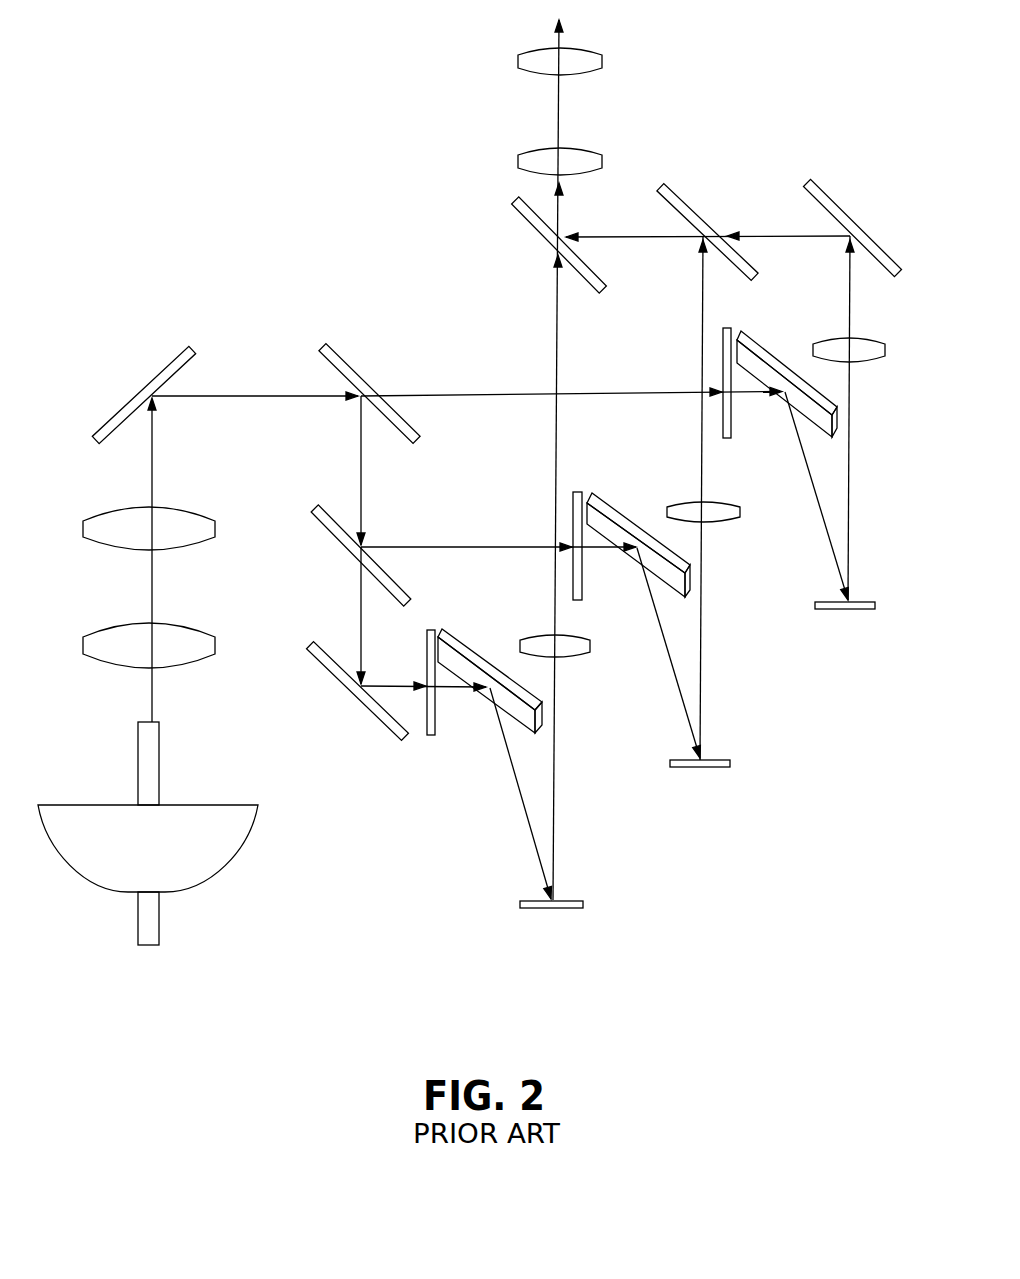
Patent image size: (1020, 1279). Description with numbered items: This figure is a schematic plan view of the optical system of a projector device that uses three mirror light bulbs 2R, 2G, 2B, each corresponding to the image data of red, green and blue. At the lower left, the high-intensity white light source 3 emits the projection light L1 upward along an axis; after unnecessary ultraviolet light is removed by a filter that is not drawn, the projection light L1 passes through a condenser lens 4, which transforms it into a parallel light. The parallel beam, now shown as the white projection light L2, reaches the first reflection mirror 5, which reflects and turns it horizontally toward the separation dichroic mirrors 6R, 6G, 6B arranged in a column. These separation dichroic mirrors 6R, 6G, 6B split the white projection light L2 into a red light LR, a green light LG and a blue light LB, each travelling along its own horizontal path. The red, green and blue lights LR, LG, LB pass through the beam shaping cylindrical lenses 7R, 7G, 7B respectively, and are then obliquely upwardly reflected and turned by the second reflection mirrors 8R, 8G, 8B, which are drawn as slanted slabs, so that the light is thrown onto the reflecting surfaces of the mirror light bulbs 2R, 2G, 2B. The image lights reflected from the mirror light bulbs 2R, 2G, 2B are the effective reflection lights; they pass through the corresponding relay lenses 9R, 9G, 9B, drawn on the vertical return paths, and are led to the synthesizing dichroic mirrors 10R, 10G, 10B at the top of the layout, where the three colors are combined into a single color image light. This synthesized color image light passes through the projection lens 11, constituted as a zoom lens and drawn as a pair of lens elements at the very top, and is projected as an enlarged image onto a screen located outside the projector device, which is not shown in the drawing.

The mirror light bulb 2R is at (828, 612).
The mirror light bulb 2G is at (720, 770).
The mirror light bulb 2B is at (572, 910).
The high-intensity white light source 3 is at (230, 845).
The condenser lens 4 is at (226, 517).
The first reflection mirror 5 is at (178, 347).
The separation dichroic mirror 6R is at (338, 353).
The separation dichroic mirror 6G is at (322, 528).
The separation dichroic mirror 6B is at (327, 673).
The beam shaping cylindrical lens 7R is at (727, 327).
The beam shaping cylindrical lens 7G is at (582, 490).
The beam shaping cylindrical lens 7B is at (432, 628).
The second reflection mirror 8R is at (768, 350).
The second reflection mirror 8G is at (625, 513).
The second reflection mirror 8B is at (462, 638).
The relay lens 9R is at (832, 336).
The relay lens 9G is at (742, 512).
The relay lens 9B is at (592, 645).
The synthesizing dichroic mirror 10R is at (830, 192).
The synthesizing dichroic mirror 10G is at (680, 194).
The synthesizing dichroic mirror 10B is at (524, 224).
The projection lens 11 is at (616, 53).
The projection light L1 is at (152, 697).
The projection light L2 is at (152, 460).
The red light LR is at (450, 393).
The green light LG is at (432, 545).
The blue light LB is at (390, 683).